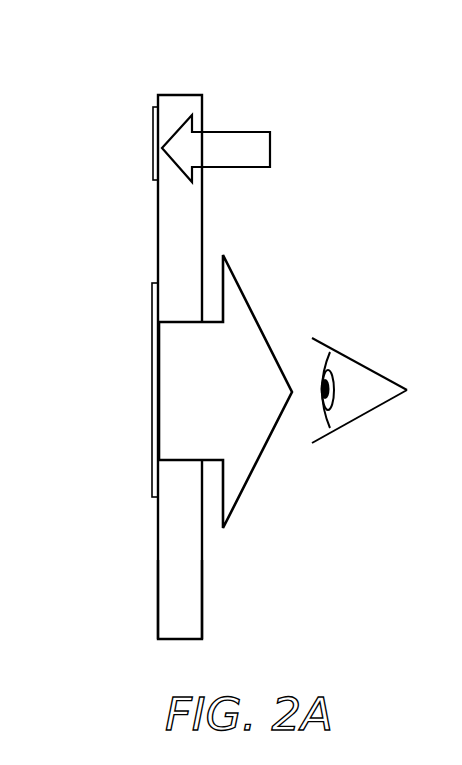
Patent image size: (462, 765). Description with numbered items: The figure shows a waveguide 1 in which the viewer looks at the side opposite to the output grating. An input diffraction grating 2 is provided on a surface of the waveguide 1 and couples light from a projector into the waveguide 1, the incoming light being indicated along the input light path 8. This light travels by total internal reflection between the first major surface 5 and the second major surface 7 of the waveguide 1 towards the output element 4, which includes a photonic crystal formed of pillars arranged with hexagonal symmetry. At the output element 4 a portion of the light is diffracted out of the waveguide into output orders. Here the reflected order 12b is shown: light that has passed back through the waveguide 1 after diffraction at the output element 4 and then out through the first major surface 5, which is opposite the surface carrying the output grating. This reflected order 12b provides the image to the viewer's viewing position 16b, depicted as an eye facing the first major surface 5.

The waveguide 1 is at (178, 93).
The input diffraction grating 2 is at (152, 118).
The output element 4 is at (152, 480).
The first major surface 5 is at (202, 622).
The second major surface 7 is at (158, 622).
The input light path 8 is at (272, 145).
The reflected order 12b is at (225, 391).
The viewing position 16b is at (358, 363).